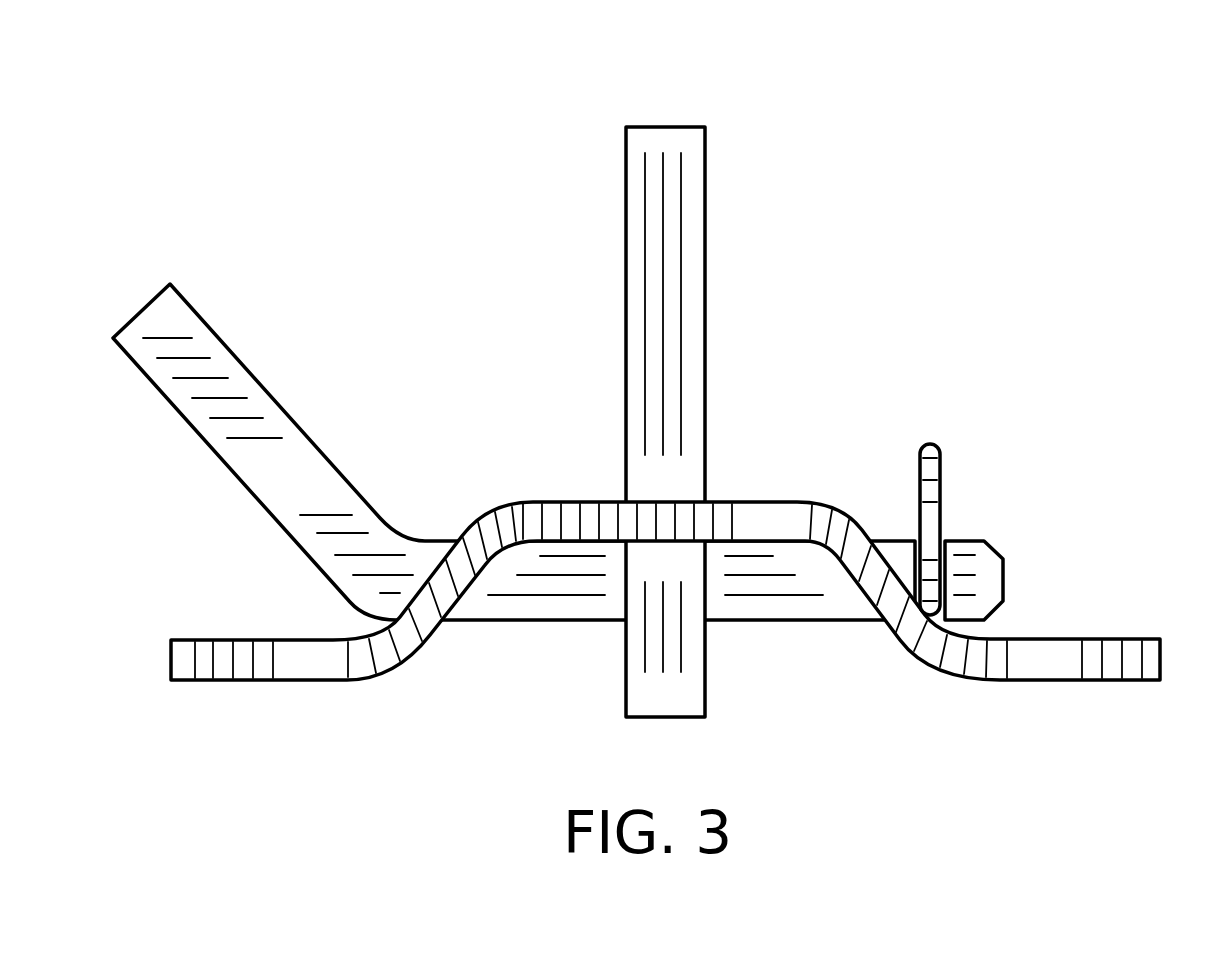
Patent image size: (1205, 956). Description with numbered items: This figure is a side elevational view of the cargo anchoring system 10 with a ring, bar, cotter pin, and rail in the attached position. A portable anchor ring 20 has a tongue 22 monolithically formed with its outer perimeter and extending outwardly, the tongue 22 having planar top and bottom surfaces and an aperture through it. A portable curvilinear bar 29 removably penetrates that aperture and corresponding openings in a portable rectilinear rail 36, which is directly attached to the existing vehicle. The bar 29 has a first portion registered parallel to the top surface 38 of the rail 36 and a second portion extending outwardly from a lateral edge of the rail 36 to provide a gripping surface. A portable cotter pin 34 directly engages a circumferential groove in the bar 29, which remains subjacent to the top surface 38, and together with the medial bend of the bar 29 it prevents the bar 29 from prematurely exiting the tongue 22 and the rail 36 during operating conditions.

The system 10 is at (1134, 174).
The portable anchor ring 20 is at (695, 216).
The tongue 22 is at (695, 657).
The portable curvilinear bar 29 is at (310, 467).
The cotter pin 34 is at (933, 472).
The portable rectilinear rail 36 is at (665, 503).
The top surface of the rail 38 is at (565, 502).